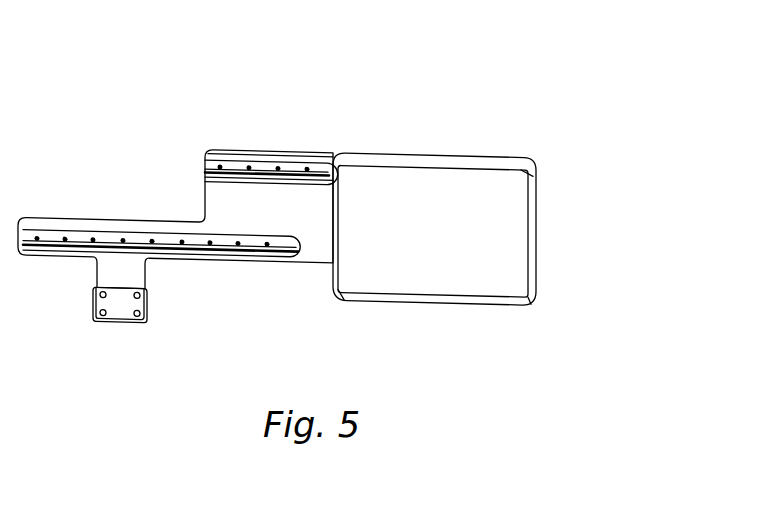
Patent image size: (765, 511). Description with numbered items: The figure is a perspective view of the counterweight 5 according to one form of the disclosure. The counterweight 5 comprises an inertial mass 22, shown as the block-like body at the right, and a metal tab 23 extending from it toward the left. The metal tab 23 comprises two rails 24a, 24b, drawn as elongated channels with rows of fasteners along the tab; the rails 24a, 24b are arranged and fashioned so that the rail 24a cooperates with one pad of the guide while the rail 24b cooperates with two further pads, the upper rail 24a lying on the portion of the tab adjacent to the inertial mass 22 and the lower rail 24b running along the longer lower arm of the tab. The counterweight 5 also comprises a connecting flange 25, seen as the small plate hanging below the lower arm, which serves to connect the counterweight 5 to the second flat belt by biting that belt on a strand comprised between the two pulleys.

The counterweight 5 is at (323, 201).
The inertial mass 22 is at (538, 231).
The metal tab 23 is at (223, 194).
The rail 24a is at (268, 168).
The rail 24b is at (227, 243).
The connecting flange 25 is at (122, 302).